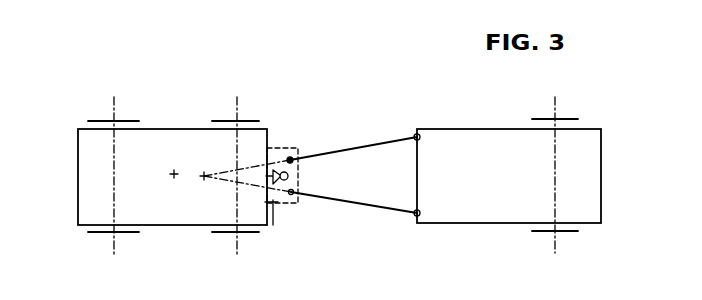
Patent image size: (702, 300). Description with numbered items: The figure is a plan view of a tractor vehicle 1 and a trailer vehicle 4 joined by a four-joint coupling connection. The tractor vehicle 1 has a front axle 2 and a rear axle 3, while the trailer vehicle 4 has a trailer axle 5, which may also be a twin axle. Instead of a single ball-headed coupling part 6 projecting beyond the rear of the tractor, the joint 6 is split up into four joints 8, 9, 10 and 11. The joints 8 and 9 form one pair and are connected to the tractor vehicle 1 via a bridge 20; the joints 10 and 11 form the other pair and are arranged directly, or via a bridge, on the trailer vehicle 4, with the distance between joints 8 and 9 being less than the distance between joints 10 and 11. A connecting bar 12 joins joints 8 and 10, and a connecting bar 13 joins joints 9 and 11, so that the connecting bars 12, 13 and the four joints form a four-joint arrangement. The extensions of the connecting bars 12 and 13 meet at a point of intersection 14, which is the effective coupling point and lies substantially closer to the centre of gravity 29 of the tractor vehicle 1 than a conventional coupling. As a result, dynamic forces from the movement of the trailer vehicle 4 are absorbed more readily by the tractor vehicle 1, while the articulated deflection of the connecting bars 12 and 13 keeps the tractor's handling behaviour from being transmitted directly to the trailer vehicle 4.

The tractor vehicle 1 is at (178, 147).
The front axle 2 is at (113, 107).
The rear axle 3 is at (236, 100).
The trailer vehicle 4 is at (500, 140).
The trailer axle 5 is at (557, 100).
The ball-headed coupling part 6 is at (288, 176).
The joint 8 is at (294, 148).
The joint 9 is at (291, 196).
The joint 10 is at (415, 135).
The joint 11 is at (417, 216).
The connecting bar 12 is at (356, 147).
The connecting bar 13 is at (369, 205).
The point of intersection 14 is at (204, 178).
The bridge 20 is at (286, 198).
The centre of gravity 29 is at (174, 178).